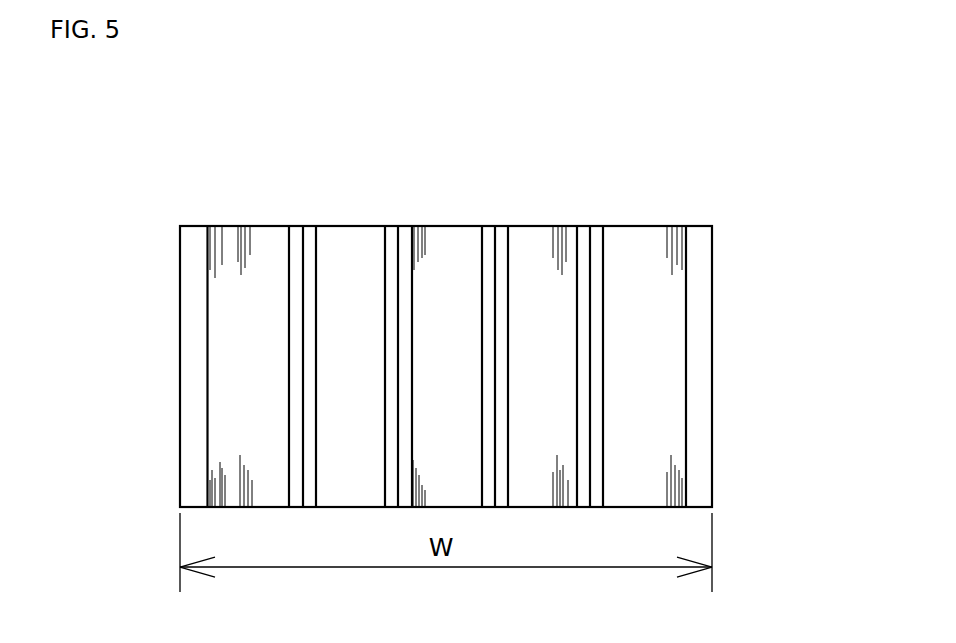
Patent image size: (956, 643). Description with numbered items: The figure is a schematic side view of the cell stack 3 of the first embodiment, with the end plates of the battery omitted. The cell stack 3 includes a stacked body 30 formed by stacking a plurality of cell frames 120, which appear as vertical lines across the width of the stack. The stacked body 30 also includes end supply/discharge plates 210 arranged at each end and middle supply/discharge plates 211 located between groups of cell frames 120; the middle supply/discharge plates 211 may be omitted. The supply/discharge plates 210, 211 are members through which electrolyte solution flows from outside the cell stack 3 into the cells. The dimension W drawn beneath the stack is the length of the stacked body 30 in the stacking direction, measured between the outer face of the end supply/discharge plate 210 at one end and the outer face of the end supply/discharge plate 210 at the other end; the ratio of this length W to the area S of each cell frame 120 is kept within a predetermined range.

The cell stack 3 is at (340, 178).
The stacked body 30 is at (508, 226).
The cell frame 120 is at (414, 226).
The end supply/discharge plate 210 is at (190, 280).
The middle supply/discharge plate 211 is at (292, 226).